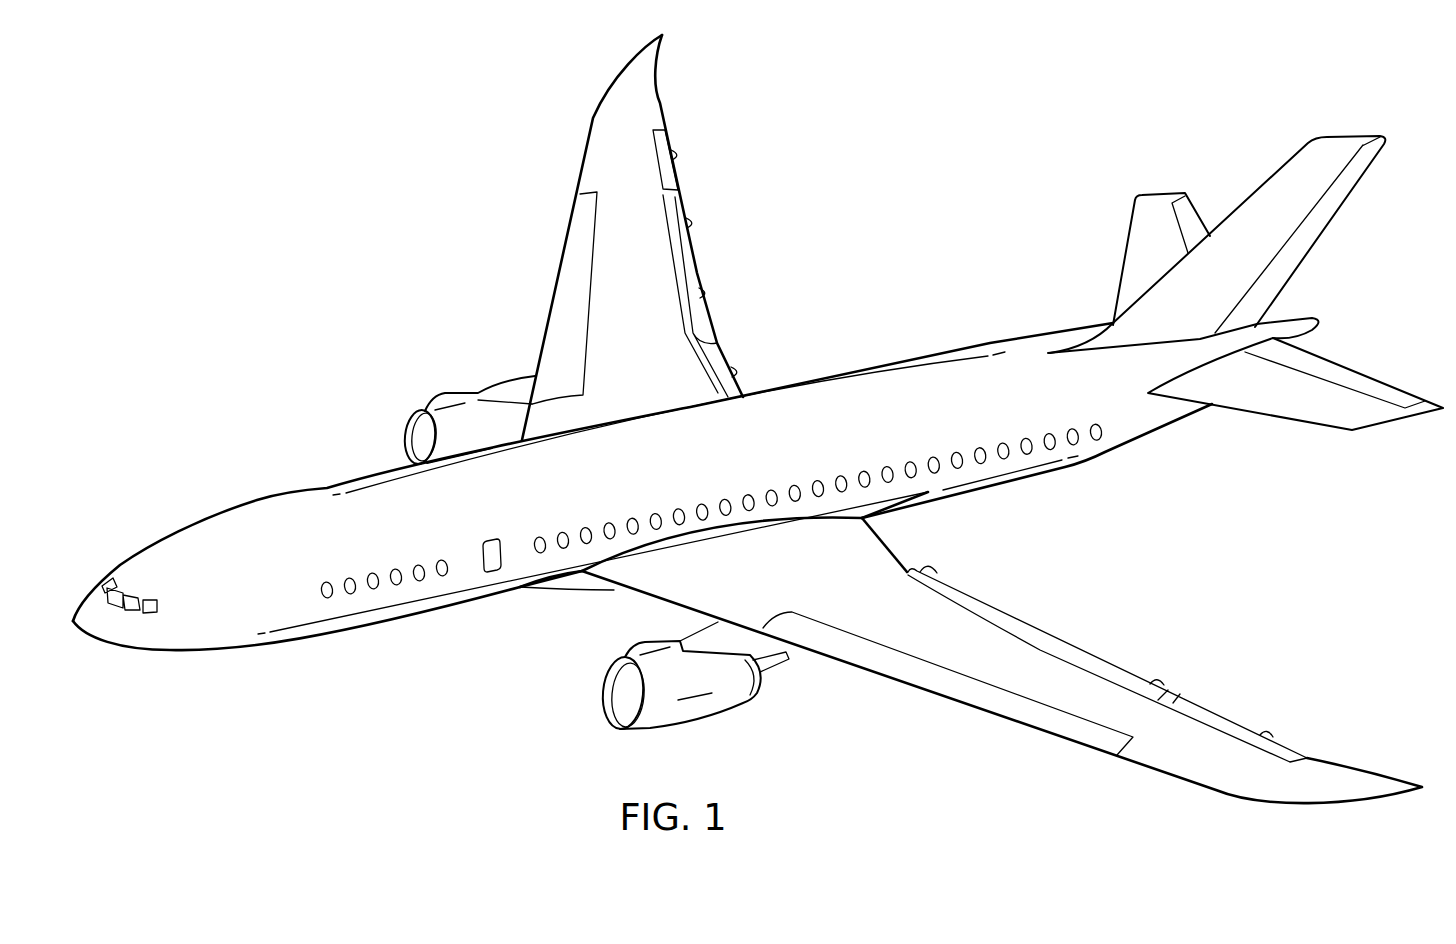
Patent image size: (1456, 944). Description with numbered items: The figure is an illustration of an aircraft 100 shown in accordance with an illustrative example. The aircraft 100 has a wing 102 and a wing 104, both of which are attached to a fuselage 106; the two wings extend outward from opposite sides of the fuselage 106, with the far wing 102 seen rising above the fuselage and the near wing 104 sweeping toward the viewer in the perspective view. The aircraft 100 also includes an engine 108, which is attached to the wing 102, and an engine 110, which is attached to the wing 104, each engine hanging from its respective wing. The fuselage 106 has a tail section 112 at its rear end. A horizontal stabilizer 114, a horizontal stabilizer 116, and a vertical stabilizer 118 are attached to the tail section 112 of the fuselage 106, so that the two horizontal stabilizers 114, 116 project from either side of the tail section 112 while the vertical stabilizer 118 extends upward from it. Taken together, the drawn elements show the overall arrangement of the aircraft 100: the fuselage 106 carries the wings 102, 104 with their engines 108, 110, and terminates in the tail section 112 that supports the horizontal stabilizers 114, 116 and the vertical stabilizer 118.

The aircraft 100 is at (352, 188).
The wing 102 is at (590, 125).
The wing 104 is at (1302, 805).
The fuselage 106 is at (260, 502).
The engine 108 is at (448, 393).
The engine 110 is at (697, 723).
The tail section 112 is at (1193, 466).
The horizontal stabilizer 114 is at (1125, 257).
The horizontal stabilizer 116 is at (1302, 418).
The vertical stabilizer 118 is at (1325, 225).